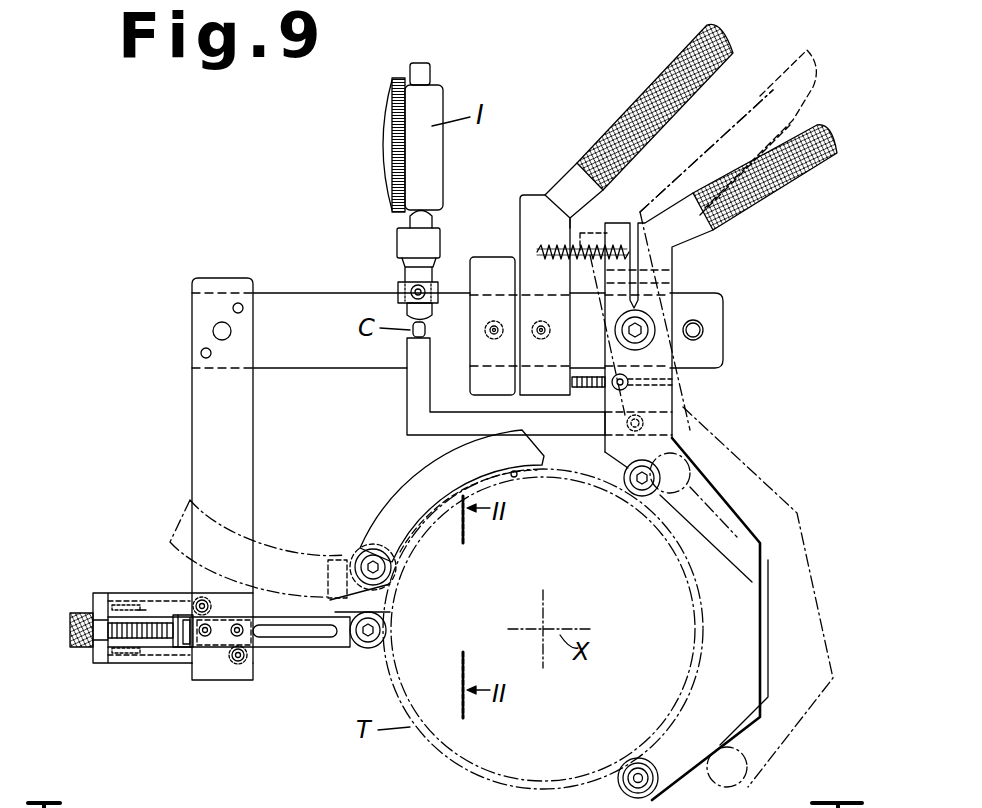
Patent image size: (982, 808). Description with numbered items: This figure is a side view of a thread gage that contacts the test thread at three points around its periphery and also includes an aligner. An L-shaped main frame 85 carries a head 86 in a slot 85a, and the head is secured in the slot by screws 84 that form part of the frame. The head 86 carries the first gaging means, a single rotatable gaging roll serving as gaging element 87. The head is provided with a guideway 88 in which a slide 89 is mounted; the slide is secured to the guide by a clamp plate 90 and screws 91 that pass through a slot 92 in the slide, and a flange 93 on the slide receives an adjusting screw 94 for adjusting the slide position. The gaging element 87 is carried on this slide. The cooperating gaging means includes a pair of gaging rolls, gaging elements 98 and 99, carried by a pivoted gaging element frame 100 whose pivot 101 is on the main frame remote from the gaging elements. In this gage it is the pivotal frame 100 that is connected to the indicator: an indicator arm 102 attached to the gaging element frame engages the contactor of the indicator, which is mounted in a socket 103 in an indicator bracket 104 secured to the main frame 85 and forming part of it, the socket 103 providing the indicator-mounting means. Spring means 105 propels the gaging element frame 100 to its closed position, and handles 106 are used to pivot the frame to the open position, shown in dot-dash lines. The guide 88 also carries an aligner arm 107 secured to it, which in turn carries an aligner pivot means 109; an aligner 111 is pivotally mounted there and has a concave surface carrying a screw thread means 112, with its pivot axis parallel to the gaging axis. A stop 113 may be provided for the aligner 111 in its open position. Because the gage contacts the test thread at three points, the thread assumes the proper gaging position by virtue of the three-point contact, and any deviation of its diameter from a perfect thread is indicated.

The screws 84 is at (200, 602).
The main frame 85 is at (343, 368).
The slot 85a is at (204, 670).
The head 86 is at (155, 657).
The gaging element 87 is at (392, 630).
The guideway 88 is at (141, 605).
The slide 89 is at (283, 643).
The clamp plate 90 is at (222, 617).
The screws 91 is at (208, 637).
The slot 92 is at (317, 628).
The flange 93 is at (178, 650).
The adjusting screw 94 is at (147, 641).
The gaging element 98 is at (630, 762).
The gaging element 99 is at (635, 496).
The gaging element frame 100 is at (826, 632).
The pivot 101 is at (645, 325).
The indicator arm 102 is at (415, 421).
The socket 103 is at (401, 274).
The indicator bracket 104 is at (398, 290).
The spring means 105 is at (580, 247).
The handles 106 is at (735, 53).
The aligner arm 107 is at (372, 601).
The aligner pivot means 109 is at (392, 573).
The aligner 111 is at (425, 474).
The screw thread means 112 is at (514, 474).
The stop 113 is at (342, 600).